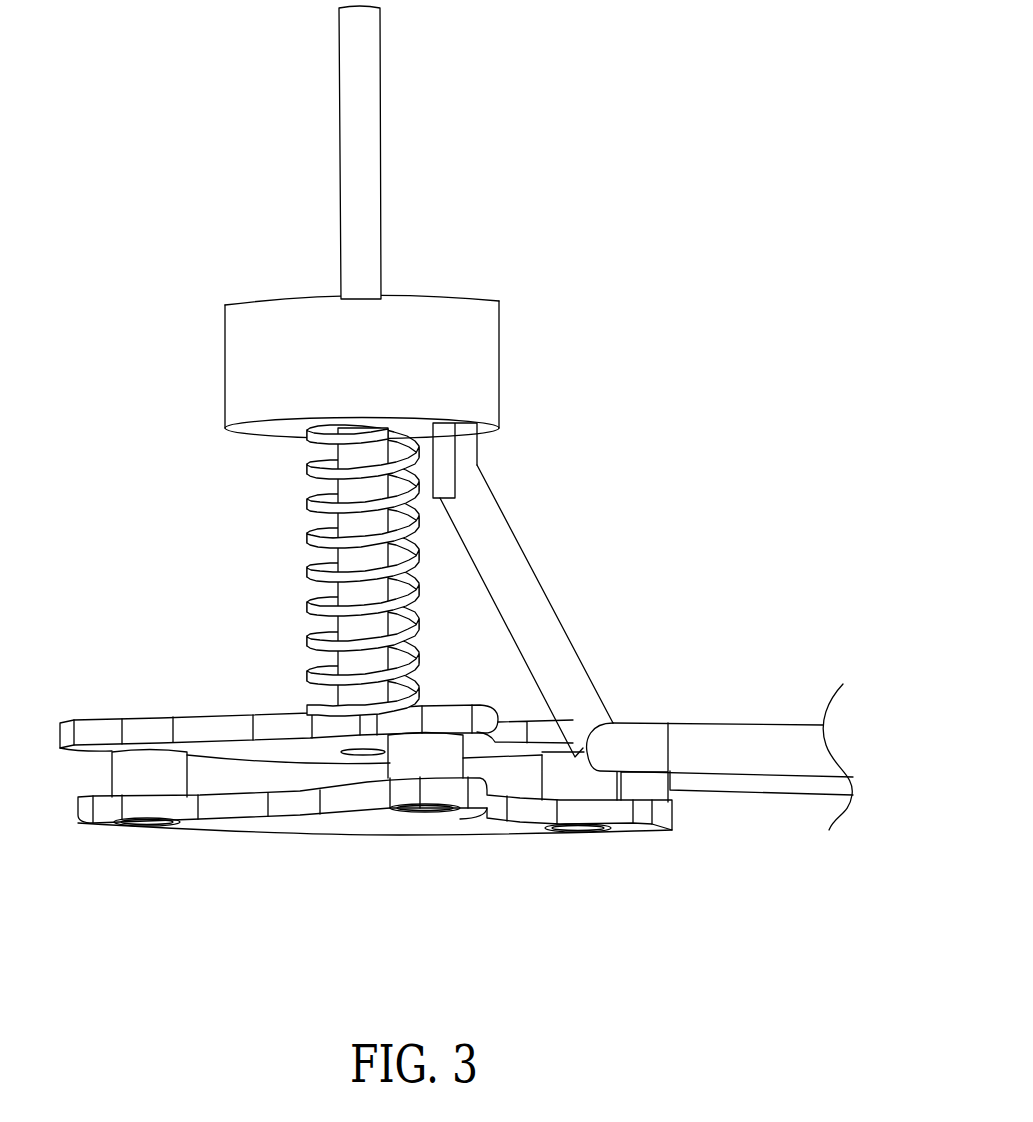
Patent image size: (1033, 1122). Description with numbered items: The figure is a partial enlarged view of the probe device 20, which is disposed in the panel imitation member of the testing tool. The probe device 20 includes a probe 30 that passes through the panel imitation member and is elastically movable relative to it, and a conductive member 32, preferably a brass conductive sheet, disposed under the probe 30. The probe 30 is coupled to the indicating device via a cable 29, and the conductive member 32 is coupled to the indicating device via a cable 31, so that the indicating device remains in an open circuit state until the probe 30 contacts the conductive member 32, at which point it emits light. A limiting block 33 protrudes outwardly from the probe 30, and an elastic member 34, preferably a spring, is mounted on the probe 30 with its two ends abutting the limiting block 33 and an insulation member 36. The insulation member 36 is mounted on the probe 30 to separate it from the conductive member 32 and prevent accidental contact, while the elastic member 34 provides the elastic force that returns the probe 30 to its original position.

The probe device 20 is at (698, 60).
The cable 29 is at (527, 597).
The probe 30 is at (357, 102).
The cable 31 is at (753, 785).
The conductive member 32 is at (232, 807).
The limiting block 33 is at (455, 296).
The elastic member 34 is at (305, 525).
The insulation member 36 is at (96, 727).